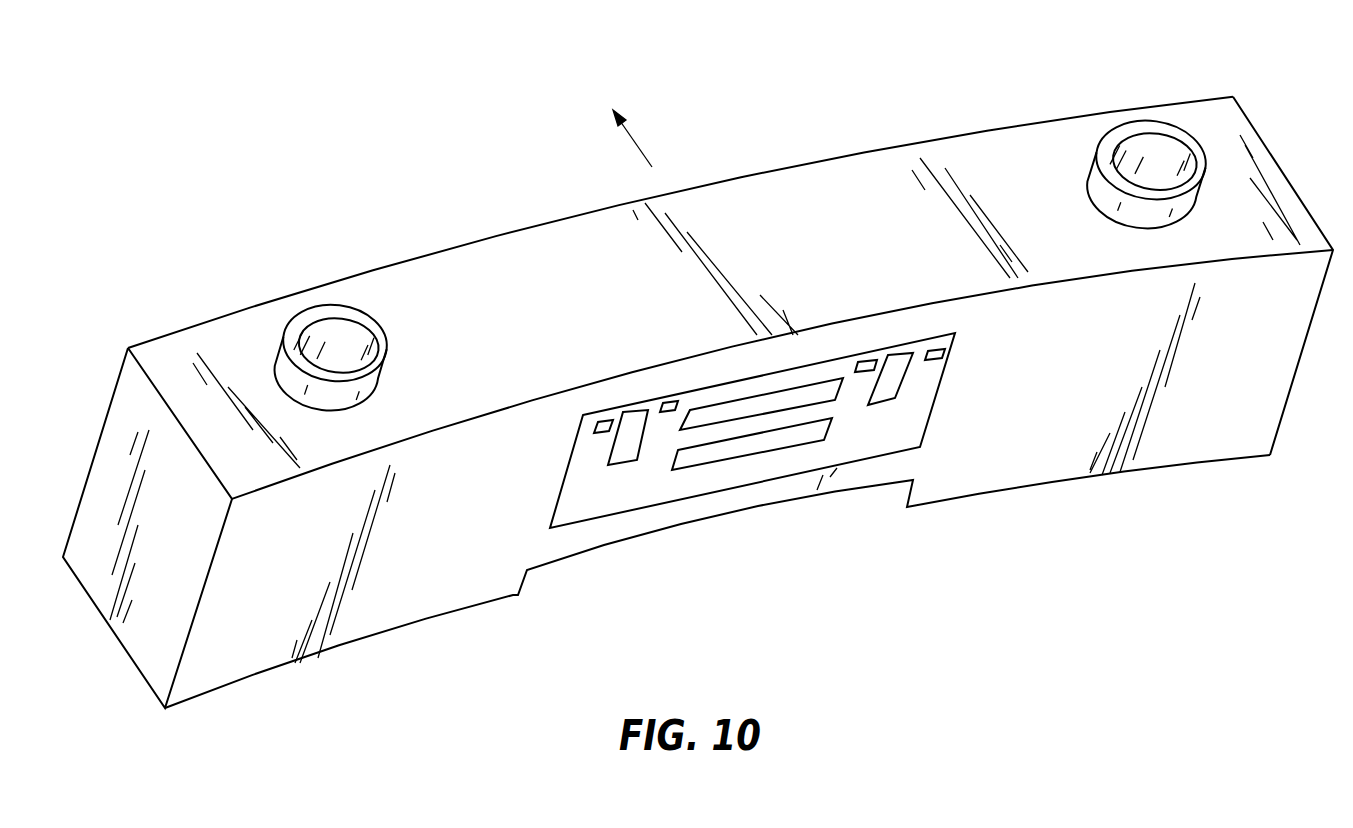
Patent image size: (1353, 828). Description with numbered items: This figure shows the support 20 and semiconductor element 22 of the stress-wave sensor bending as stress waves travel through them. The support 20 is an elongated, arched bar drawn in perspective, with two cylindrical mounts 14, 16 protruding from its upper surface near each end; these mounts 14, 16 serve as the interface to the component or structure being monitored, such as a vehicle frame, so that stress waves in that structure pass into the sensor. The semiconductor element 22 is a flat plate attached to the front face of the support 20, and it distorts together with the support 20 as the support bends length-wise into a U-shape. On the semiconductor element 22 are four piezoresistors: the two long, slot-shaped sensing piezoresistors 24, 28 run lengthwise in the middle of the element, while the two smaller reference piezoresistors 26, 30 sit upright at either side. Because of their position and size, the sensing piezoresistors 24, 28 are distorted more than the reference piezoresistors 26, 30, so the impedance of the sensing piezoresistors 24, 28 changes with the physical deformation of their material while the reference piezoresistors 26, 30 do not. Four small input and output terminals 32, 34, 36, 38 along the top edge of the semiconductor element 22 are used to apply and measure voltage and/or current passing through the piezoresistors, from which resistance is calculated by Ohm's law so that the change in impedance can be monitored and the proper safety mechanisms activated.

The support 20 is at (188, 242).
The mount 14 is at (380, 350).
The mount 16 is at (1193, 150).
The semiconductor element 22 is at (890, 442).
The sensing piezoresistor 24 is at (760, 398).
The sensing piezoresistor 28 is at (697, 462).
The reference piezoresistor 26 is at (637, 417).
The reference piezoresistor 30 is at (898, 362).
The input and output terminal 32 is at (597, 420).
The input and output terminal 34 is at (673, 405).
The input and output terminal 36 is at (865, 362).
The input and output terminal 38 is at (933, 352).